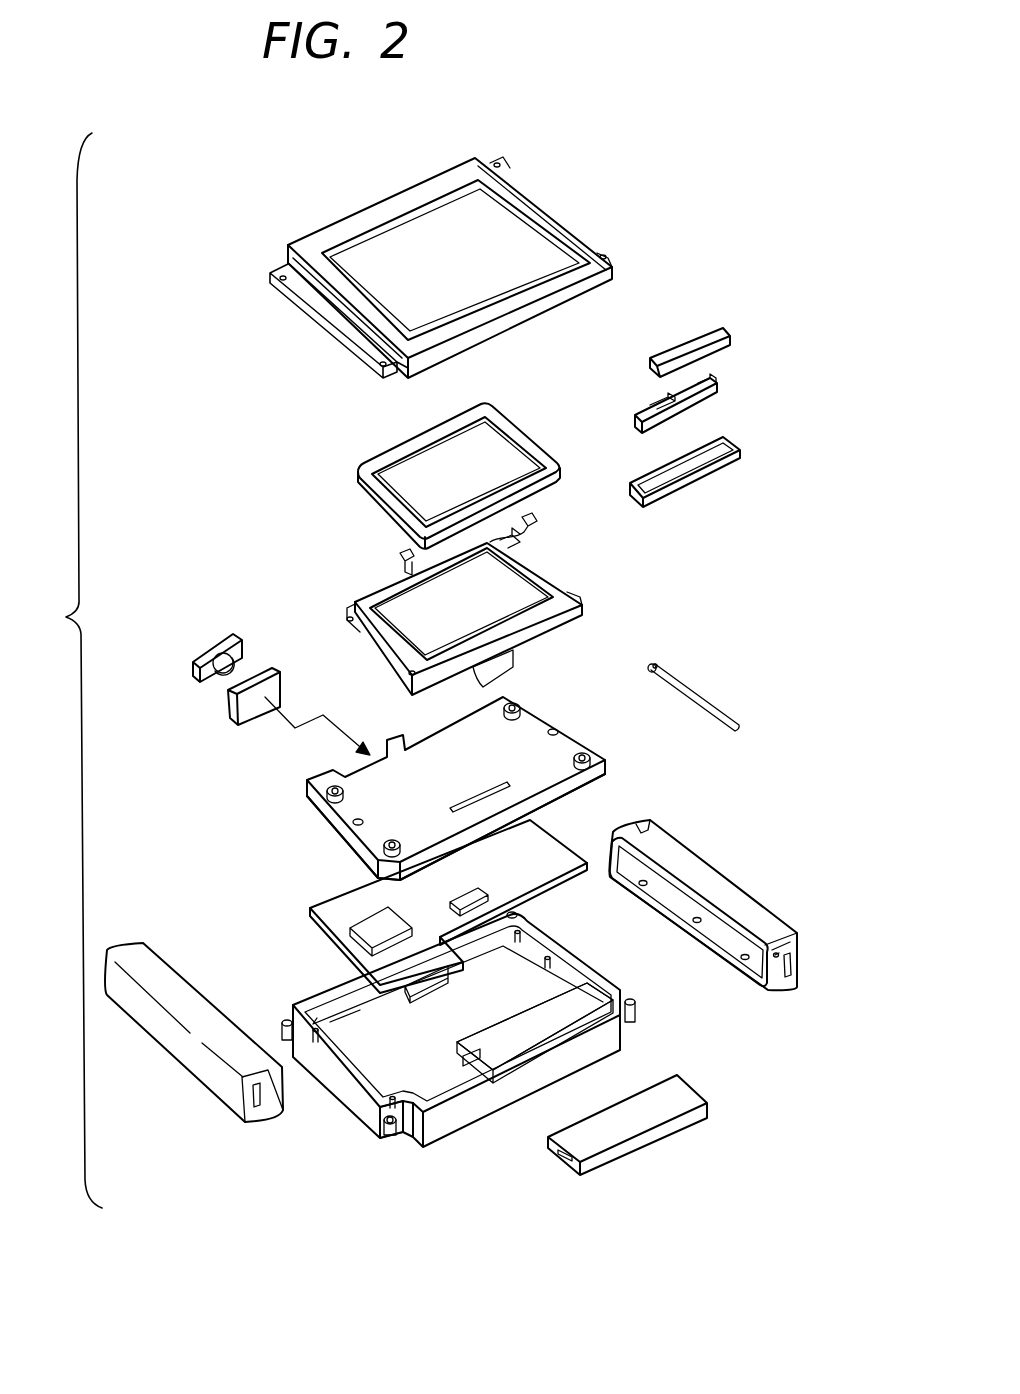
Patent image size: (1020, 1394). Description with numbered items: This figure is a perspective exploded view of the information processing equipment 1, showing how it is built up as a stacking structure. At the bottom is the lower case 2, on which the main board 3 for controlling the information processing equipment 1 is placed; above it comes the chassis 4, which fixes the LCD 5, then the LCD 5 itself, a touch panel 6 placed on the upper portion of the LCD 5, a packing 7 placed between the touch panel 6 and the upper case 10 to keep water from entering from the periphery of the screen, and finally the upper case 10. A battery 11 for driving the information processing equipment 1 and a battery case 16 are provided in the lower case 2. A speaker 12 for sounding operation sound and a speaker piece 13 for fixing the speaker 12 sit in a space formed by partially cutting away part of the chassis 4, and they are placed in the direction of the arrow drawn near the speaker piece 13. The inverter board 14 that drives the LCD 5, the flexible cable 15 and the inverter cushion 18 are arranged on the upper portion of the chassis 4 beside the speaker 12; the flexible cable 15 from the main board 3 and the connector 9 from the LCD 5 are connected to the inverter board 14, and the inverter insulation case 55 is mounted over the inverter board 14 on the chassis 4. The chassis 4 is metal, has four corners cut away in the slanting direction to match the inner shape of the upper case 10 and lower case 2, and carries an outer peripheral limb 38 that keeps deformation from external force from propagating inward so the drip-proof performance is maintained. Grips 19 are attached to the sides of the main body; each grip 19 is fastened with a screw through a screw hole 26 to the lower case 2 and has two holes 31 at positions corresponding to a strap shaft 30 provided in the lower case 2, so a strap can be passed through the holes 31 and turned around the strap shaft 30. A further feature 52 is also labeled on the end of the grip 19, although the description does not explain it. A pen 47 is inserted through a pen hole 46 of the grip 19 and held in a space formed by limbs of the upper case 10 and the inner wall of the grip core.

The information processing equipment 1 is at (578, 181).
The lower case 2 is at (483, 1108).
The main board 3 is at (323, 912).
The chassis 4 is at (318, 790).
The LCD 5 is at (358, 637).
The touch panel 6 is at (566, 578).
The packing 7 is at (381, 458).
The connector 9 is at (537, 523).
The upper case 10 is at (322, 233).
The battery 11 is at (686, 1090).
The speaker 12 is at (205, 652).
The speaker piece 13 is at (248, 733).
The inverter board 14 is at (716, 395).
The flexible cable 15 is at (401, 560).
The battery case 16 is at (585, 1010).
The inverter cushion 18 is at (722, 352).
The grip 19 is at (725, 888).
The screw hole 26 is at (745, 958).
The strap shaft 30 is at (381, 1125).
The hole 31 is at (790, 975).
The outer peripheral limb 38 is at (331, 836).
The pen hole 46 is at (643, 826).
The pen 47 is at (704, 702).
The hole 52 is at (800, 940).
The inverter insulation case 55 is at (712, 470).